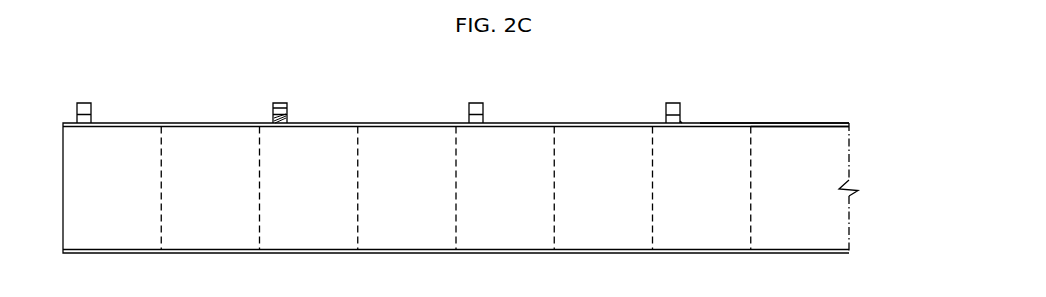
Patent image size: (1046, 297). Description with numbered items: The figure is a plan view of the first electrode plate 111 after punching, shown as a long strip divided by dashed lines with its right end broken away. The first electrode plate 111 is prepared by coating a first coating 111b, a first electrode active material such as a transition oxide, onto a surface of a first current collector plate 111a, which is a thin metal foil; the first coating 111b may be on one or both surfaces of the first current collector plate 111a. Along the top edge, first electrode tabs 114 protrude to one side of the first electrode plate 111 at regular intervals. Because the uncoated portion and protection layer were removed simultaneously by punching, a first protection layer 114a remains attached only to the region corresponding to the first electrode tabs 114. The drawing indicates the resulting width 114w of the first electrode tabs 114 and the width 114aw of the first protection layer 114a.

The first electrode plate 111 is at (855, 157).
The first current collector plate 111a is at (824, 125).
The first coating 111b is at (783, 142).
The first electrode tabs 114 is at (670, 101).
The first protection layer 114a is at (681, 121).
The width of the first electrode tabs 114w is at (279, 101).
The width of the first protection layer 114aw is at (283, 117).